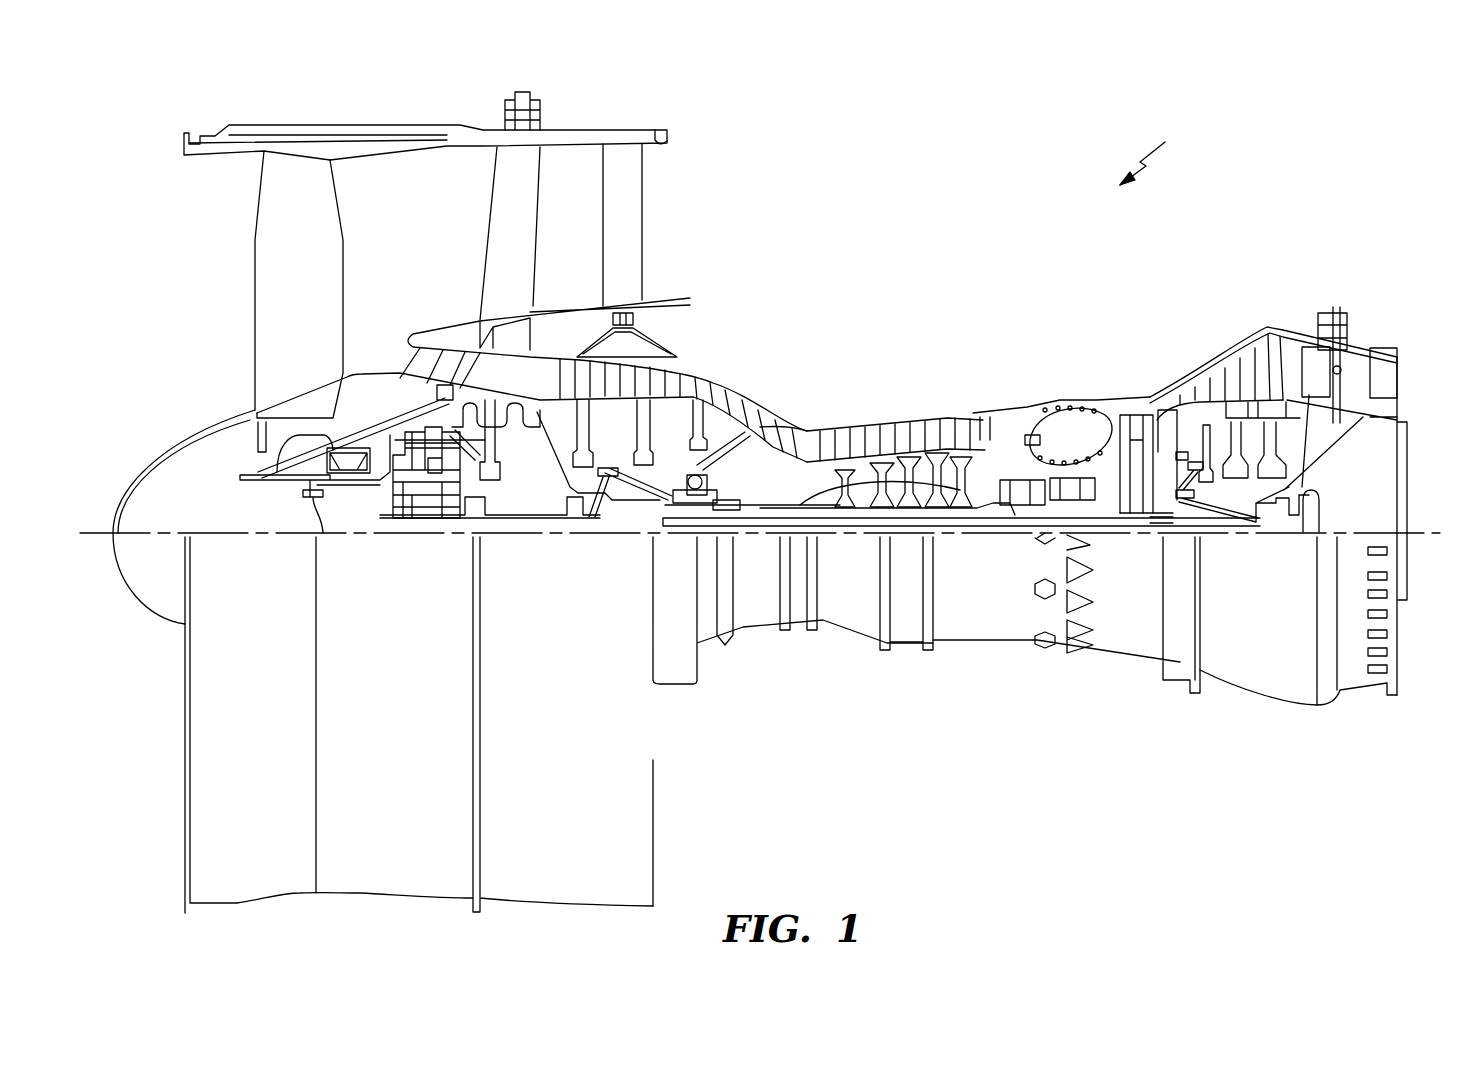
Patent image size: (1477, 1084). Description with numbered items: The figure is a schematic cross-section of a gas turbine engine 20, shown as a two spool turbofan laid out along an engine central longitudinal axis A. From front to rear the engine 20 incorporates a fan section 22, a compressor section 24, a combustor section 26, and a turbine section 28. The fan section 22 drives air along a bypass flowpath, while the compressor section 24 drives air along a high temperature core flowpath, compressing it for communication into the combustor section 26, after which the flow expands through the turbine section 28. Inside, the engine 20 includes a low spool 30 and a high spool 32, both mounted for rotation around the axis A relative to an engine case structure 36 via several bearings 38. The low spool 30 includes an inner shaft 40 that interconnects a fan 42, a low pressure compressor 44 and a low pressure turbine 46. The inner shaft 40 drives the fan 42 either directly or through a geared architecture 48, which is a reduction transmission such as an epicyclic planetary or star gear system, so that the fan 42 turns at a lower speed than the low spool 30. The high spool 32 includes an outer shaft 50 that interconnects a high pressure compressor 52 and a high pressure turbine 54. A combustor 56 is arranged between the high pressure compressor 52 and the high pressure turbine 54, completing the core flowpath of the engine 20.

The gas turbine engine 20 is at (1159, 148).
The fan section 22 is at (478, 118).
The compressor section 24 is at (485, 275).
The combustor section 26 is at (1070, 275).
The turbine section 28 is at (1333, 275).
The low spool 30 is at (740, 487).
The high spool 32 is at (985, 490).
The engine case structure 36 is at (905, 648).
The bearings 38 is at (222, 610).
The inner shaft 40 is at (1100, 520).
The fan 42 is at (312, 338).
The low pressure compressor 44 is at (672, 382).
The low pressure turbine 46 is at (1250, 360).
The geared architecture 48 is at (436, 502).
The outer shaft 50 is at (1097, 490).
The high pressure compressor 52 is at (897, 487).
The high pressure turbine 54 is at (1133, 430).
The combustor 56 is at (1075, 437).
The engine central longitudinal axis A is at (1427, 527).